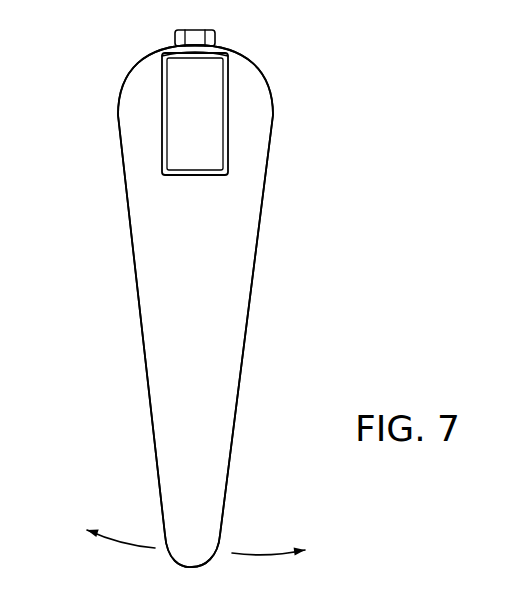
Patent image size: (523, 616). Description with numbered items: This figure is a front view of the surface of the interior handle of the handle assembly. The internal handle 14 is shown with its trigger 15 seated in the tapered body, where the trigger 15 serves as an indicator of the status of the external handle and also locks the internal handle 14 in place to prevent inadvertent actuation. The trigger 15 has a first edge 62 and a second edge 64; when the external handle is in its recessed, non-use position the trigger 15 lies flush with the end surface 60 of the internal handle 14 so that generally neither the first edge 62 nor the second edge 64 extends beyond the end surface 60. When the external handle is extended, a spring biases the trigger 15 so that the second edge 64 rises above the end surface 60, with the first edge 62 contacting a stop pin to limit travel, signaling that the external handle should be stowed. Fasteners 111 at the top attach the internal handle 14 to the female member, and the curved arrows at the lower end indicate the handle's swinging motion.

The internal handle 14 is at (230, 476).
The end surface 60 is at (218, 371).
The trigger 15 is at (158, 103).
The first edge 62 is at (177, 174).
The second edge 64 is at (165, 52).
The fasteners 111 is at (213, 38).